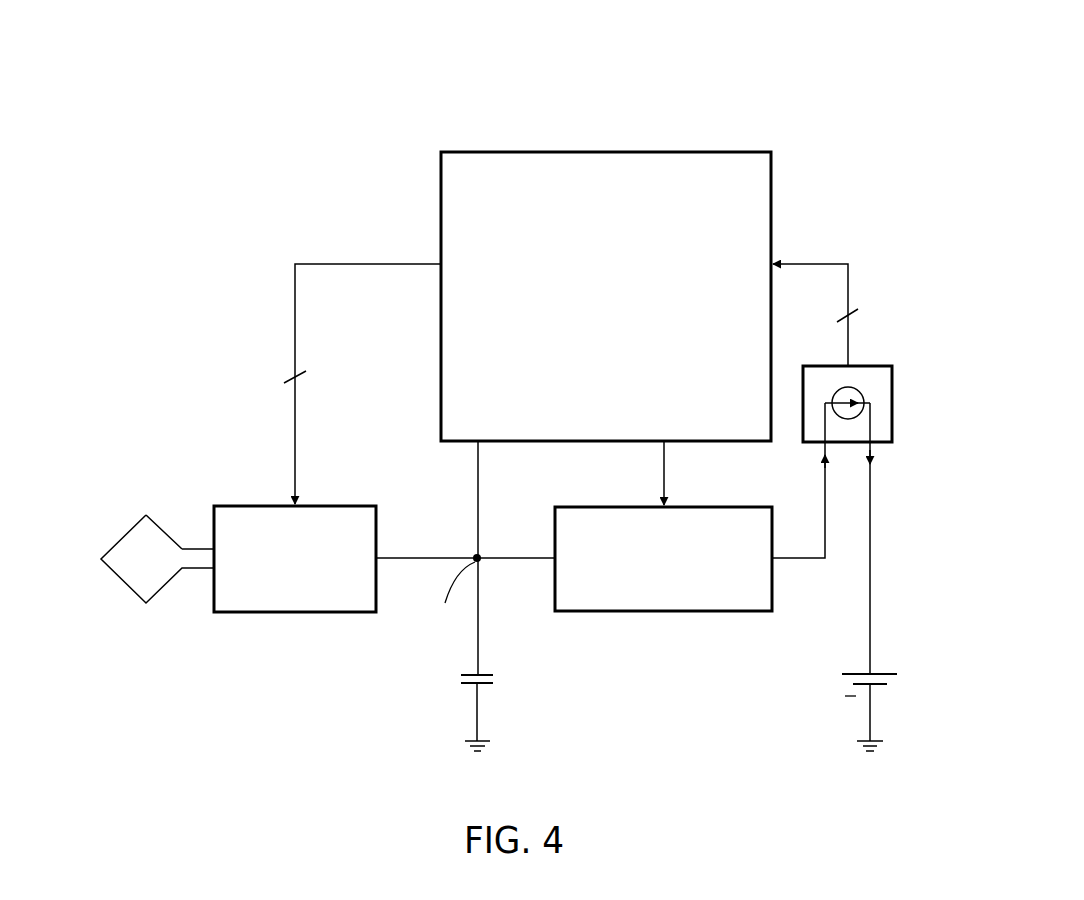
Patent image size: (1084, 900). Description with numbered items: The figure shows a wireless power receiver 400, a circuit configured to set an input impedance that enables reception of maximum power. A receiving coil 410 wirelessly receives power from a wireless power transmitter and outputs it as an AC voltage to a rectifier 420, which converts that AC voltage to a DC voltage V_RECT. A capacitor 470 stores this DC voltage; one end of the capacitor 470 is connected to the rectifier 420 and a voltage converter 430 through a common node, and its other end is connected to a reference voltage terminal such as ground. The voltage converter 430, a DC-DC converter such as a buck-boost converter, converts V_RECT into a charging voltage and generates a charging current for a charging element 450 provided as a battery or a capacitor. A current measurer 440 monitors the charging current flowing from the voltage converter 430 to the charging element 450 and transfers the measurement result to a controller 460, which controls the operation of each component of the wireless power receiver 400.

The wireless power receiver 400 is at (594, 62).
The receiving coil 410 is at (127, 537).
The rectifier 420 is at (318, 505).
The voltage converter 430 is at (700, 505).
The current measurer 440 is at (870, 365).
The charging element 450 is at (888, 672).
The controller 460 is at (700, 150).
The capacitor 470 is at (482, 672).